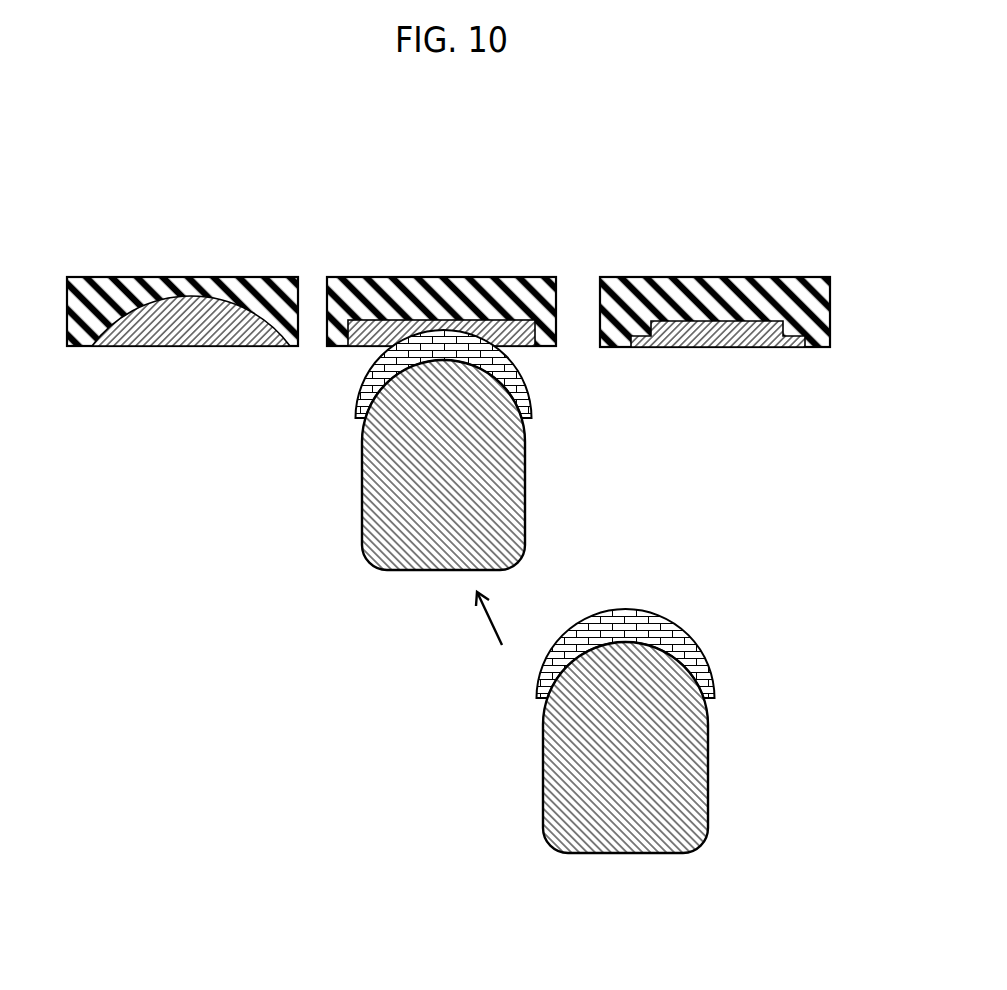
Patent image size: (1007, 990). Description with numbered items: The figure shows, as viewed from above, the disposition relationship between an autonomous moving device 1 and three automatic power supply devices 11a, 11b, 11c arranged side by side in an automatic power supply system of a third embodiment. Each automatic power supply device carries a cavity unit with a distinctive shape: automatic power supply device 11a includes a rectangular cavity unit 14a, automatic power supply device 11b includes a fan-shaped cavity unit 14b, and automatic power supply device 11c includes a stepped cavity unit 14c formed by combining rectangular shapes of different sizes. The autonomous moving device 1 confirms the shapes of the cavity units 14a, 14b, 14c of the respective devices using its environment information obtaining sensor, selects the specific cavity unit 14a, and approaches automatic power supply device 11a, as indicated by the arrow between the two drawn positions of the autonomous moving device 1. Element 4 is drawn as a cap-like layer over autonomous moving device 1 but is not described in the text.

The autonomous moving device 1 is at (373, 530).
The cap layer 4 is at (507, 372).
The automatic power supply device 11a is at (377, 293).
The automatic power supply device 11b is at (120, 295).
The automatic power supply device 11c is at (643, 292).
The cavity unit 14a is at (517, 330).
The cavity unit 14b is at (193, 318).
The cavity unit 14c is at (763, 327).